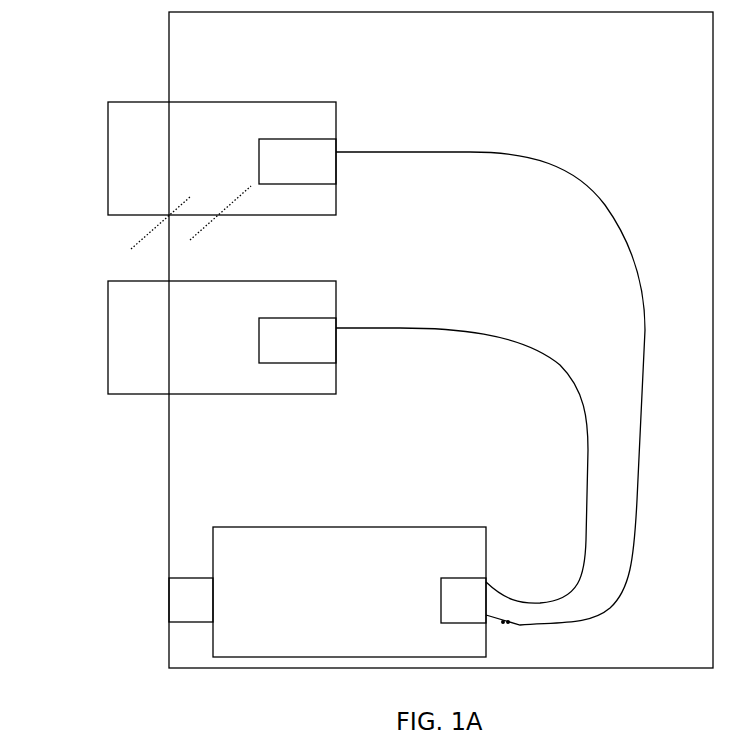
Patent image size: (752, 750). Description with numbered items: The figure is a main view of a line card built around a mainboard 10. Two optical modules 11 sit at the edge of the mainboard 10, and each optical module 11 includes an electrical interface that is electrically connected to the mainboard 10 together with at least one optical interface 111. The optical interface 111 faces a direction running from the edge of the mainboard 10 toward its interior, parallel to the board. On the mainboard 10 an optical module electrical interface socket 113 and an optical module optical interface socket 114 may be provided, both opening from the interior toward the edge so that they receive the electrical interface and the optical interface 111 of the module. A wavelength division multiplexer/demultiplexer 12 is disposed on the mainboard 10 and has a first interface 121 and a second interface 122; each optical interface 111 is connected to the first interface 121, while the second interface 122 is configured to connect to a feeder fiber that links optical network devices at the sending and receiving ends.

The mainboard 10 is at (169, 44).
The optical module 11 is at (108, 158).
The optical interface 111 is at (259, 169).
The optical module electrical interface socket 113 is at (141, 235).
The optical module optical interface socket 114 is at (212, 226).
The wavelength division multiplexer/demultiplexer 12 is at (397, 527).
The first interface 121 is at (441, 610).
The second interface 122 is at (193, 578).